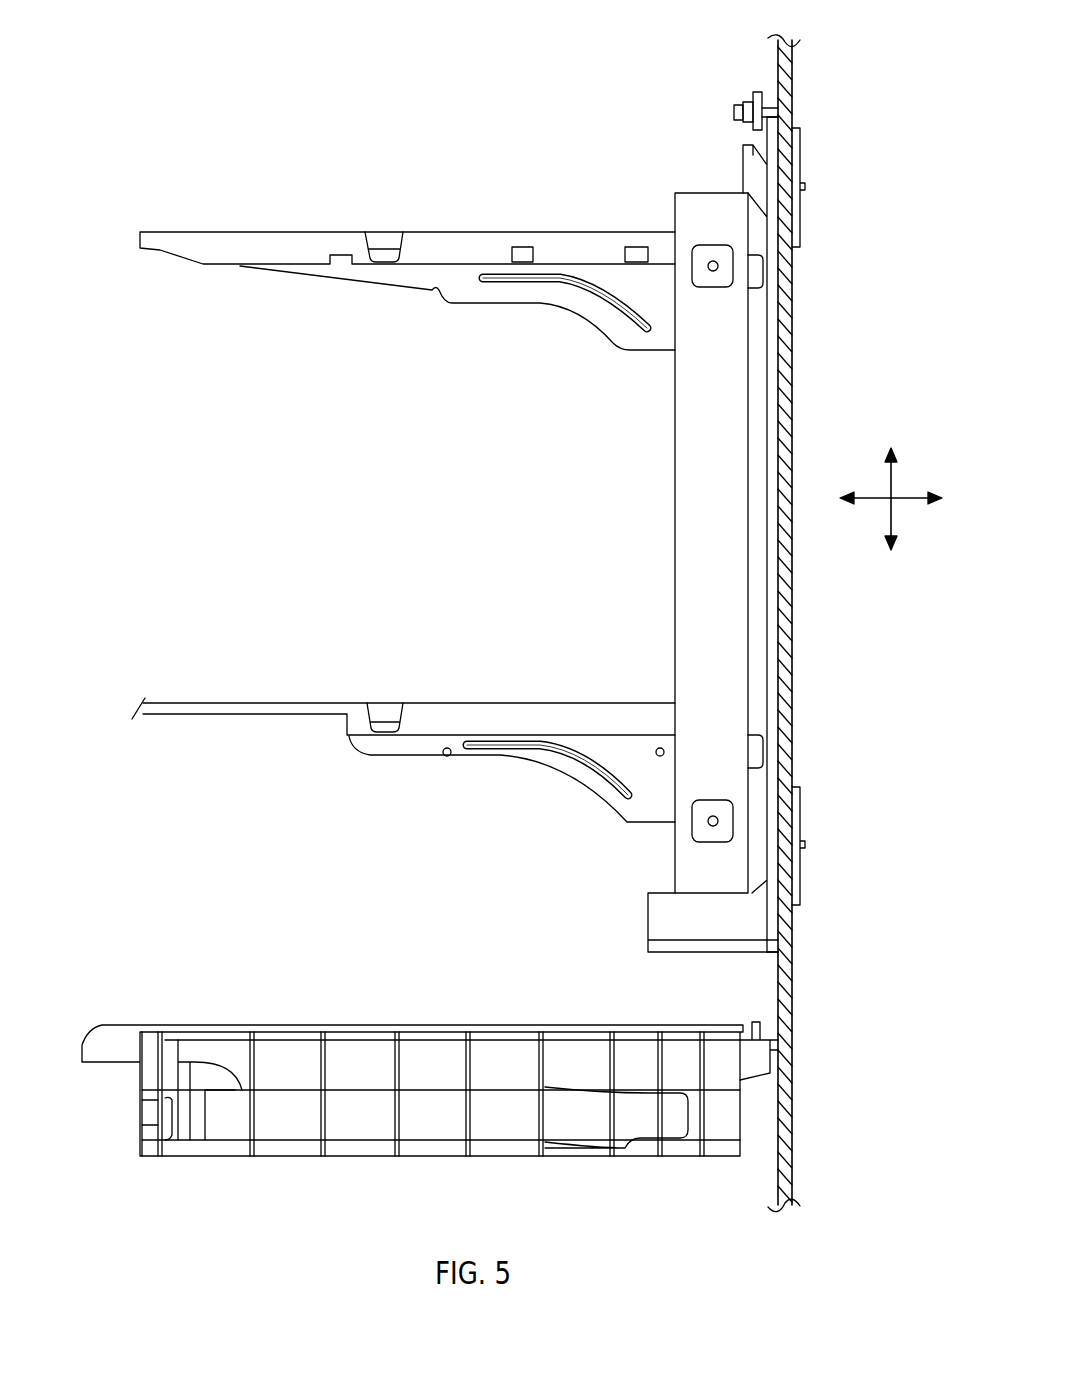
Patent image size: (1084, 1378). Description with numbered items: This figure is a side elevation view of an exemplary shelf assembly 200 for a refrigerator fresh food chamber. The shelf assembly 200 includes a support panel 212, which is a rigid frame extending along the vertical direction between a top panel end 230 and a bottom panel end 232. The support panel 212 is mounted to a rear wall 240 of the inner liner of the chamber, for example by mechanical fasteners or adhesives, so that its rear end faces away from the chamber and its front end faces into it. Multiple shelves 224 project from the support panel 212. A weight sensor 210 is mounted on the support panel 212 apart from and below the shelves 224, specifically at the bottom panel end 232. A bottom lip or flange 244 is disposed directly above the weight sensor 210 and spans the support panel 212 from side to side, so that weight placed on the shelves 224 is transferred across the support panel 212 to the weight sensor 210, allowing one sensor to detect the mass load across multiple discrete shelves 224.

The shelf assembly 200 is at (68, 106).
The weight sensor 210 is at (667, 943).
The support panel 212 is at (773, 178).
The shelves 224 is at (140, 242).
The top panel end 230 is at (736, 132).
The bottom panel end 232 is at (756, 962).
The rear wall 240 is at (786, 79).
The bottom lip or flange 244 is at (648, 913).